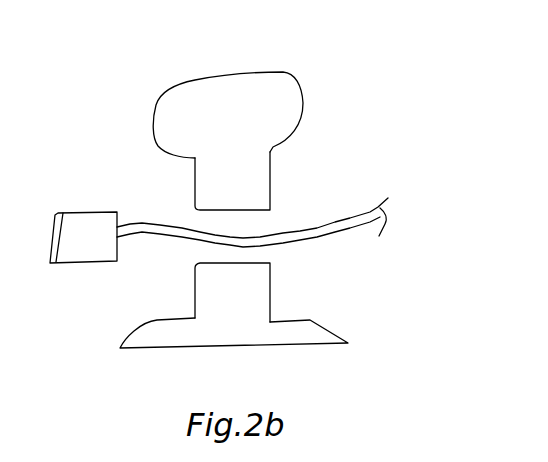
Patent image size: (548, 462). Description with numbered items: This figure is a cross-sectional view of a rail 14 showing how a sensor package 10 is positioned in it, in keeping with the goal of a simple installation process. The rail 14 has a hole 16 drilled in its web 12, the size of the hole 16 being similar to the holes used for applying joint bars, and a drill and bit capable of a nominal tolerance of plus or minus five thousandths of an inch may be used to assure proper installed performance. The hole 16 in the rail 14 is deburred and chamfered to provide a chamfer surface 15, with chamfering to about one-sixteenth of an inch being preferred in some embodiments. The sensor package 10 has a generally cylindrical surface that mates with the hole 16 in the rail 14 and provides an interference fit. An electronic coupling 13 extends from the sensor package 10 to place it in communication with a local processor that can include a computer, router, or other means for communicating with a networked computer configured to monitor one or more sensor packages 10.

The sensor package 10 is at (87, 212).
The web 12 is at (270, 283).
The electronic coupling 13 is at (328, 235).
The rail 14 is at (229, 78).
The chamfer surface 15 is at (199, 203).
The hole 16 is at (286, 211).